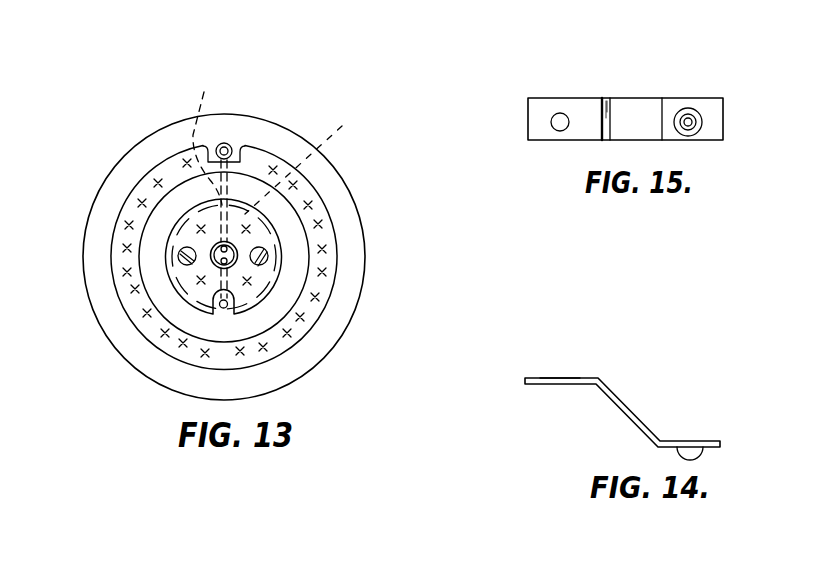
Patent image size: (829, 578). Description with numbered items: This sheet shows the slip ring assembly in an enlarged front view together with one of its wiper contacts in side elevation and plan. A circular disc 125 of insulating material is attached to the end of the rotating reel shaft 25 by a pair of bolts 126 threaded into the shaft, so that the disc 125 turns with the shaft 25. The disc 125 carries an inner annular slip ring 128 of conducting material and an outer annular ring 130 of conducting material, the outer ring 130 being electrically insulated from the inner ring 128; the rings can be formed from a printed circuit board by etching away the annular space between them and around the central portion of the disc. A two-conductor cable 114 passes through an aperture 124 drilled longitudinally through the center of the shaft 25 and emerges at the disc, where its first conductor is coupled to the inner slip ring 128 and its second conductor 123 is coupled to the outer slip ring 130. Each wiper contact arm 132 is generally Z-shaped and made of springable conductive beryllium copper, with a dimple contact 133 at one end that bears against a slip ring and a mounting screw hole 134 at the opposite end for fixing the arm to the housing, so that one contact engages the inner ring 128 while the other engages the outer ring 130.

In FIG. 13, the shaft 25 is at (331, 139).
In FIG. 13, the two-conductor cable 114 is at (215, 251).
In FIG. 13, the second conductor 123 is at (206, 184).
In FIG. 13, the aperture 124 is at (236, 248).
In FIG. 13, the circular disc 125 is at (322, 83).
In FIG. 13, the bolts 126 is at (181, 261).
In FIG. 13, the inner annular slip ring 128 is at (297, 250).
In FIG. 13, the outer annular ring 130 is at (354, 291).
In FIG. 15, the wiper contact arm 132 is at (684, 57).
In FIG. 14, the wiper contact arm 132 is at (652, 409).
In FIG. 14, the dimple contact 133 is at (692, 449).
In FIG. 15, the mounting screw hole 134 is at (560, 113).
In FIG. 14, the mounting screw hole 134 is at (563, 377).